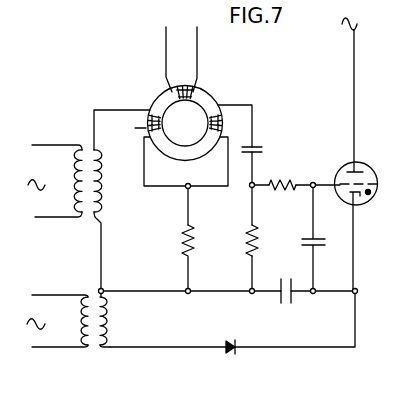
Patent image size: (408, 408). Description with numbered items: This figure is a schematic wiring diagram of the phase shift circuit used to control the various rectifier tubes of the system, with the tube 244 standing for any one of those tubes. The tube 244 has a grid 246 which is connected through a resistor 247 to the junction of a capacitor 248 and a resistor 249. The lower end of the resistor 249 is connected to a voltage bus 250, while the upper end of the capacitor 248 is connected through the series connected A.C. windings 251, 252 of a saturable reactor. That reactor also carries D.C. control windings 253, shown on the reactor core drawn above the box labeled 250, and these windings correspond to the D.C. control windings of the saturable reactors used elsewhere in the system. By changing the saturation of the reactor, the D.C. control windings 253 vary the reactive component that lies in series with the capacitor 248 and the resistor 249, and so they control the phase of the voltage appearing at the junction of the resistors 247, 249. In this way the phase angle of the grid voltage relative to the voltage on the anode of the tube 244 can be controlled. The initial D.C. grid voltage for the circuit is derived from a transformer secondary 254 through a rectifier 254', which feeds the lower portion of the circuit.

The tube 244 is at (338, 198).
The grid 246 is at (343, 183).
The resistor 247 is at (286, 178).
The capacitor 248 is at (264, 143).
The resistor 249 is at (264, 237).
The voltage bus 250 is at (202, 179).
The A.C. winding 251 is at (208, 122).
The A.C. winding 252 is at (146, 115).
The D.C. control windings 253 is at (178, 83).
The transformer secondary 254 is at (125, 319).
The rectifier 254' is at (218, 362).